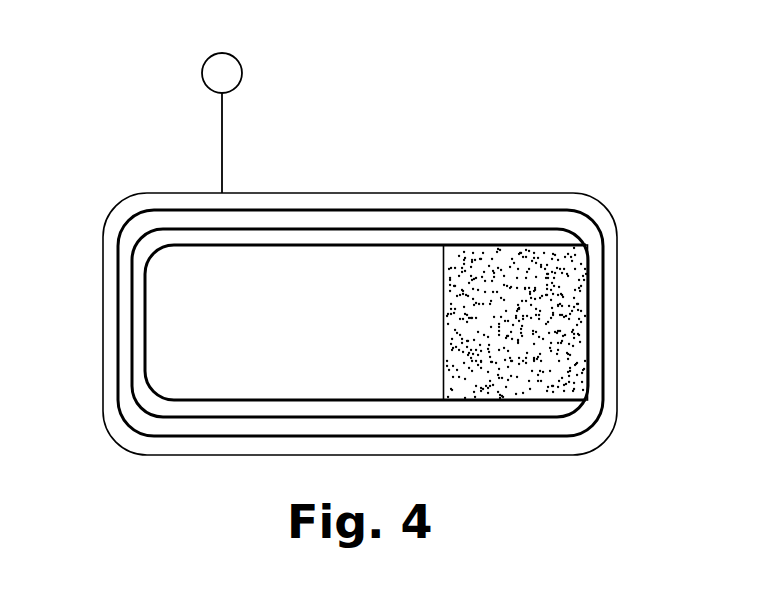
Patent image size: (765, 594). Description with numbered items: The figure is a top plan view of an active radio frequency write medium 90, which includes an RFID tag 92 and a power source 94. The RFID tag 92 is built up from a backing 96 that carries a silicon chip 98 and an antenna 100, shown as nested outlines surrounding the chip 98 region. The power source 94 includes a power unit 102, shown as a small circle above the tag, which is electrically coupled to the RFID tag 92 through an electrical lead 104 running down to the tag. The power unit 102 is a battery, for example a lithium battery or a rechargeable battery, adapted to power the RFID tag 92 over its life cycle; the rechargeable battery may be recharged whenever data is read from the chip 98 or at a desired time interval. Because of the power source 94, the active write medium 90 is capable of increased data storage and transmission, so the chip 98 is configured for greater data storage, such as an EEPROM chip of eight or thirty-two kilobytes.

The active radio frequency write medium 90 is at (544, 94).
The RFID tag 92 is at (115, 194).
The power source 94 is at (185, 114).
The backing 96 is at (312, 275).
The silicon chip 98 is at (558, 329).
The antenna 100 is at (370, 209).
The power unit 102 is at (242, 70).
The electrical lead 104 is at (222, 132).